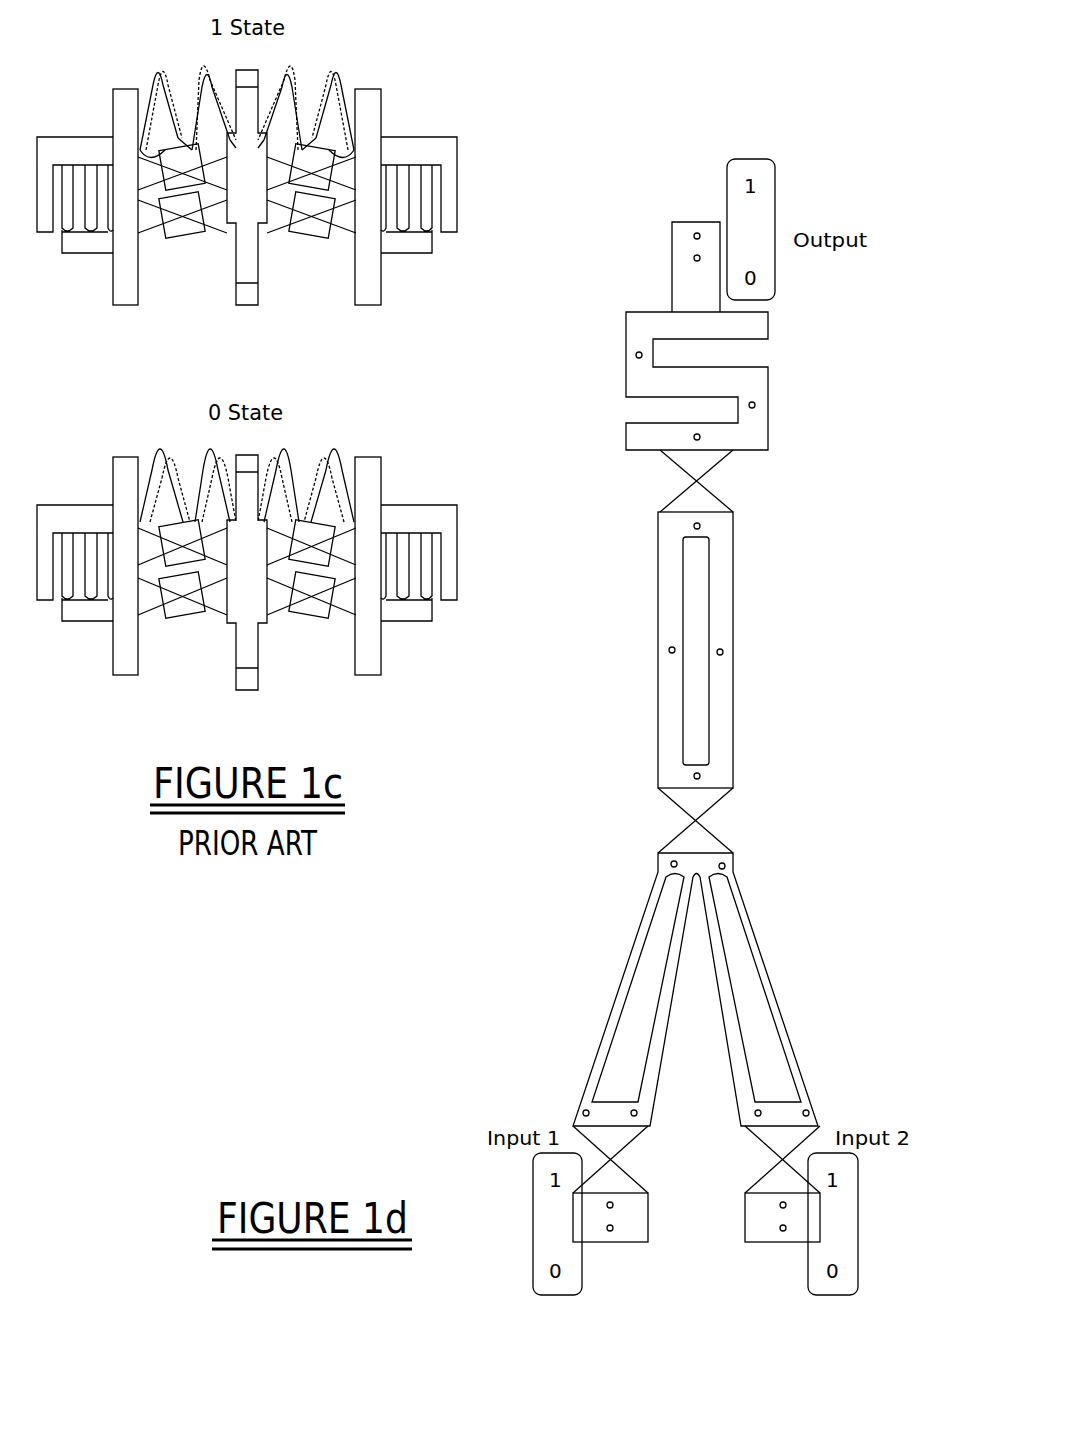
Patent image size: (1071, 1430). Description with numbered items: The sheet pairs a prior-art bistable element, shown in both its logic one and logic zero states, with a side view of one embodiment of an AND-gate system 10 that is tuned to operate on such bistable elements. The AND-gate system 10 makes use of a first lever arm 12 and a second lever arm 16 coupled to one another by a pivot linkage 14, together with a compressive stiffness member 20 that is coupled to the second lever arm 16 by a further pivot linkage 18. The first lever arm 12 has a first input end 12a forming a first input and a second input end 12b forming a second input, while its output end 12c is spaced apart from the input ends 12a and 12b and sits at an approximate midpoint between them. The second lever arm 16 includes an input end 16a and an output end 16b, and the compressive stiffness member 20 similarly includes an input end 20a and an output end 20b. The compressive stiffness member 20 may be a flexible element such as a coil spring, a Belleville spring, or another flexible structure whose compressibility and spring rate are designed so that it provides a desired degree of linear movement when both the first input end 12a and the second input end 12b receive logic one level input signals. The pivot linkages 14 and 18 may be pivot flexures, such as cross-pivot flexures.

The AND-gate system 10 is at (857, 507).
The first lever arm 12 is at (625, 973).
The first input end 12a is at (618, 1118).
The second input end 12b is at (778, 1118).
The output end 12c is at (677, 867).
The pivot linkage 14 is at (695, 823).
The second lever arm 16 is at (673, 667).
The input end 16a is at (693, 783).
The output end 16b is at (667, 522).
The pivot linkage 18 is at (698, 483).
The compressive stiffness member 20 is at (637, 355).
The input end 20a is at (697, 437).
The output end 20b is at (697, 235).